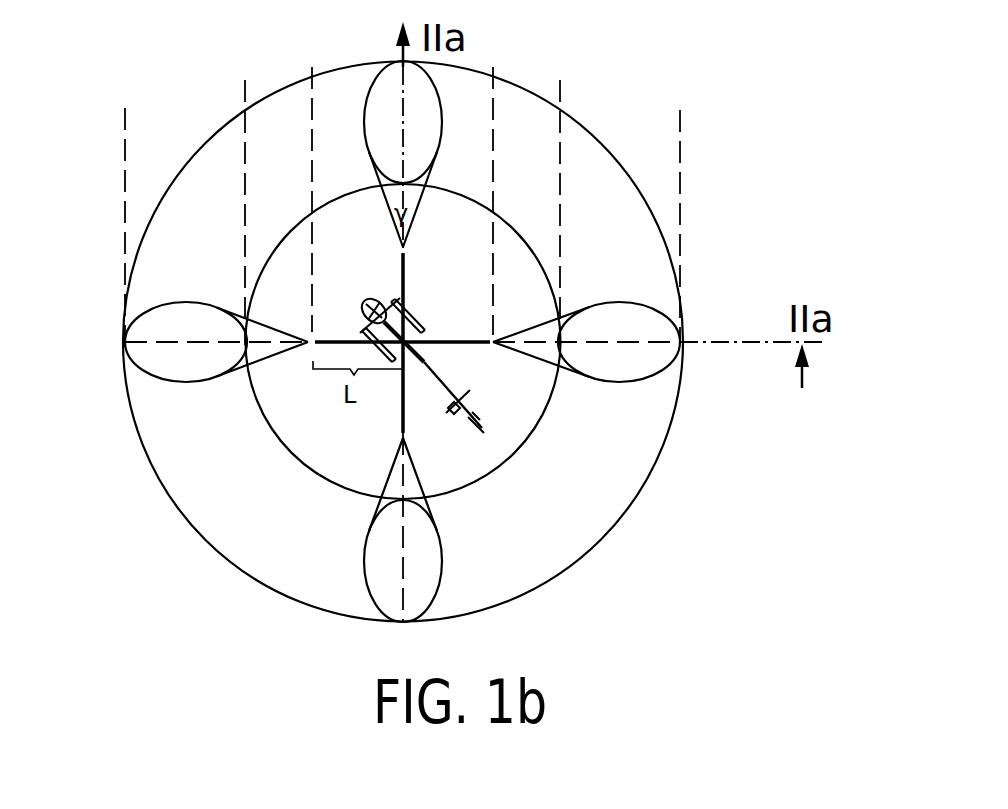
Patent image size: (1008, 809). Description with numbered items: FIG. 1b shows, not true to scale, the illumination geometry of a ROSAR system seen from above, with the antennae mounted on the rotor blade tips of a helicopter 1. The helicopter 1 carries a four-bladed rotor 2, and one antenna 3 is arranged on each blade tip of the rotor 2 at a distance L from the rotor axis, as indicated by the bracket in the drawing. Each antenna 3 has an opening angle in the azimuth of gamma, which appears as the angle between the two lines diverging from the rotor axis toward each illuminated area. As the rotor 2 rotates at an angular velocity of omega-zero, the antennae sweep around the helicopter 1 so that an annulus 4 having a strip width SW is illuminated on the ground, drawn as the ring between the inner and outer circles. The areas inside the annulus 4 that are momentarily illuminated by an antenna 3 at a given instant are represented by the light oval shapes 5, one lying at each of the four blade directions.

The helicopter 1 is at (410, 311).
The four-bladed rotor 2 is at (400, 404).
The antenna 3 is at (495, 338).
The annulus 4 is at (648, 270).
The light oval shapes 5 is at (653, 366).